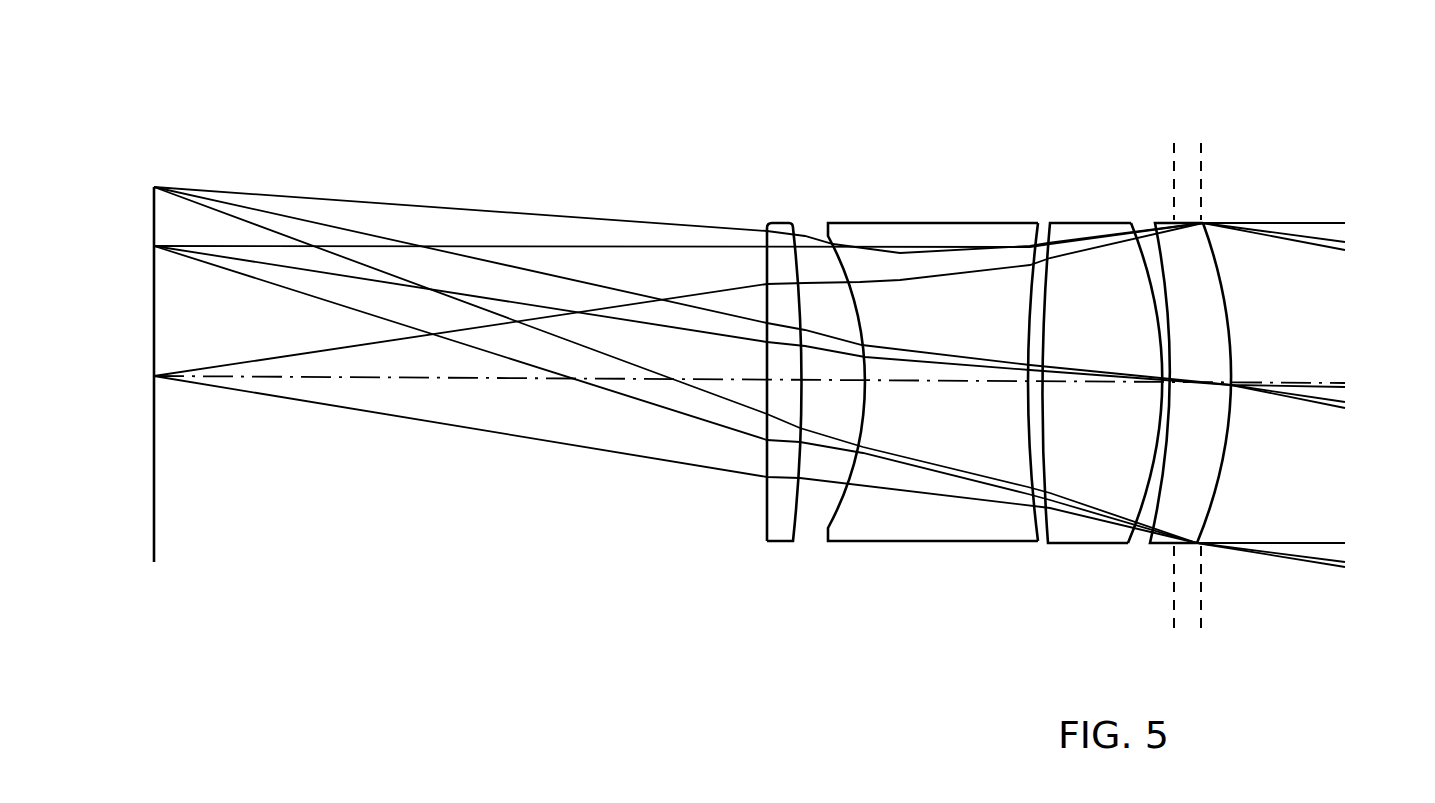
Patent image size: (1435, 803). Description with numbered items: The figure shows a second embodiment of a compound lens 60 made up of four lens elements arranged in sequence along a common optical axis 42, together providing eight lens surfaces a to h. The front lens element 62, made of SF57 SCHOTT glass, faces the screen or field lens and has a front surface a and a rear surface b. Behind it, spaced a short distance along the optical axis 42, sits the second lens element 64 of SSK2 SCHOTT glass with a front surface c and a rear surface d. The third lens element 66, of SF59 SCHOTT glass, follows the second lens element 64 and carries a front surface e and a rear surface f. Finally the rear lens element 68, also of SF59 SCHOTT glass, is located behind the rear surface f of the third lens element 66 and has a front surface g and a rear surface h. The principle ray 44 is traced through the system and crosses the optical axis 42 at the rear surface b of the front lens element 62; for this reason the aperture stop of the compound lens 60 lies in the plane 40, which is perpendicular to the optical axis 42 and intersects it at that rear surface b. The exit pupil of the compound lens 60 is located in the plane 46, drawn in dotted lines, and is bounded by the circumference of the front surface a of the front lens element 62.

The principle ray 44 is at (562, 275).
The compound lens 60 is at (902, 184).
The plane 40 is at (1173, 170).
The plane 46 is at (1205, 612).
The optical axis 42 is at (1320, 382).
The front lens element 62 is at (1245, 383).
The second lens element 64 is at (1097, 390).
The third lens element 66 is at (931, 390).
The rear lens element 68 is at (745, 390).
The front surface a is at (1230, 438).
The rear surface b is at (1165, 477).
The front surface c is at (1140, 252).
The rear surface d is at (1053, 268).
The front surface e is at (1022, 271).
The rear surface f is at (856, 276).
The front surface g is at (803, 268).
The rear surface h is at (767, 267).